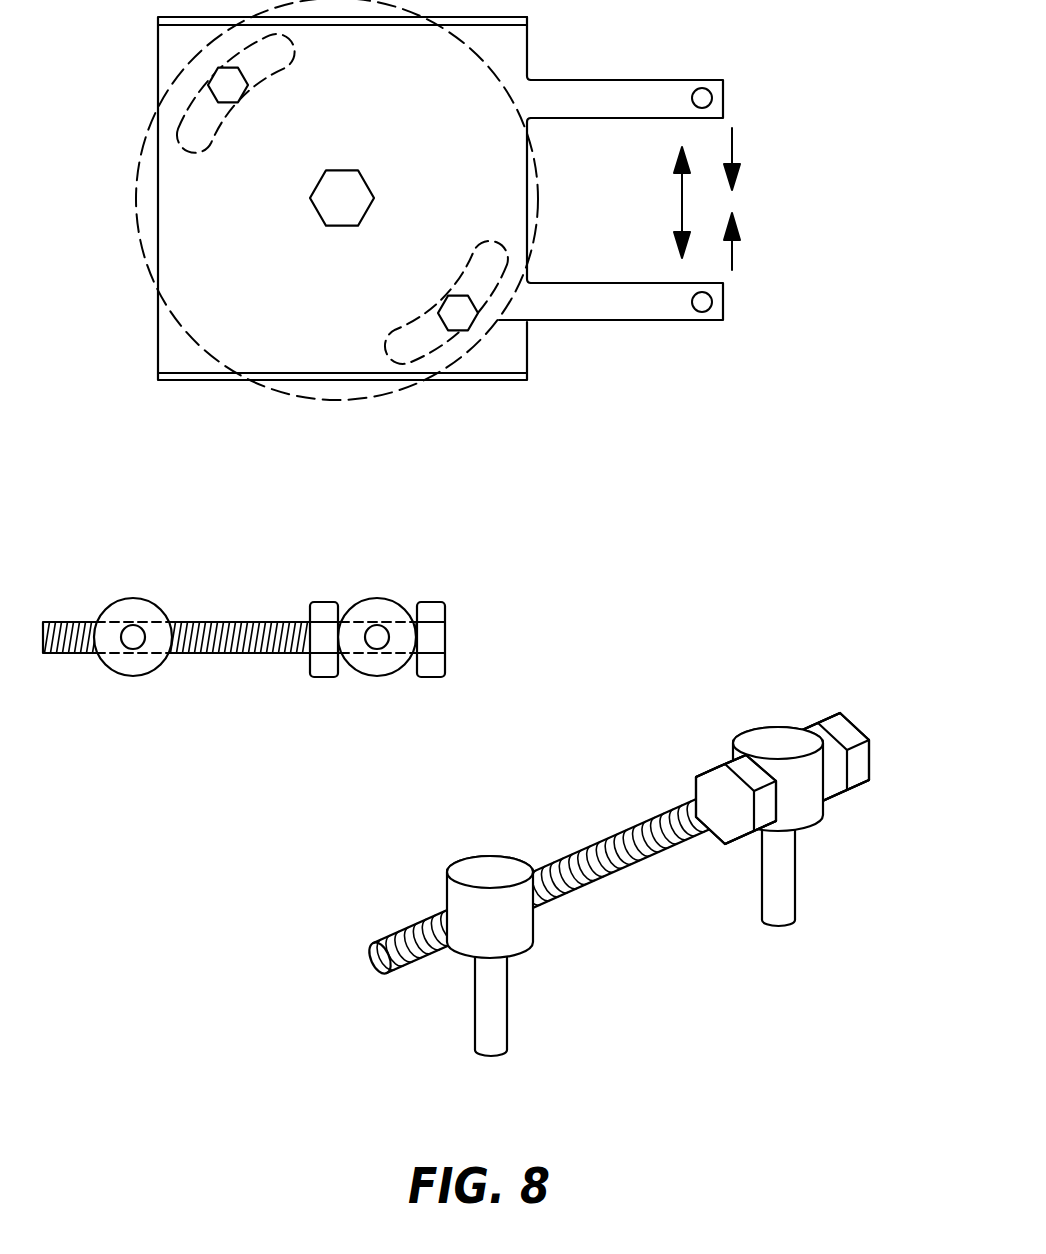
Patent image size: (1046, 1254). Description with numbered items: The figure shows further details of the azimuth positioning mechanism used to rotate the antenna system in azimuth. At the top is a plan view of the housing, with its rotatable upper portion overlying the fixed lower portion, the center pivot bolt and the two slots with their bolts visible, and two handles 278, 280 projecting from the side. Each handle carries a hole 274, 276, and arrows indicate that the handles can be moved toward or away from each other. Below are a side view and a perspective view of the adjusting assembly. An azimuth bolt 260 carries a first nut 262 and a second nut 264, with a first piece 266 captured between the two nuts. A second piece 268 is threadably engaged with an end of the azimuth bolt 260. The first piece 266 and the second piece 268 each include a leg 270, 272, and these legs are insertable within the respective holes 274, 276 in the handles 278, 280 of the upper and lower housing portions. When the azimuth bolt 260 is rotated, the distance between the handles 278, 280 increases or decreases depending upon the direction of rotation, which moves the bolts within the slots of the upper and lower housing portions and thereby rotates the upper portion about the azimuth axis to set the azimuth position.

The azimuth bolt 260 is at (220, 620).
The first nut 262 is at (428, 603).
The second nut 264 is at (325, 605).
The first piece 266 is at (375, 677).
The second piece 268 is at (135, 667).
The leg 270 is at (787, 888).
The leg 272 is at (493, 1012).
The hole 274 is at (713, 98).
The hole 276 is at (713, 302).
The handle 278 is at (625, 92).
The handle 280 is at (618, 305).